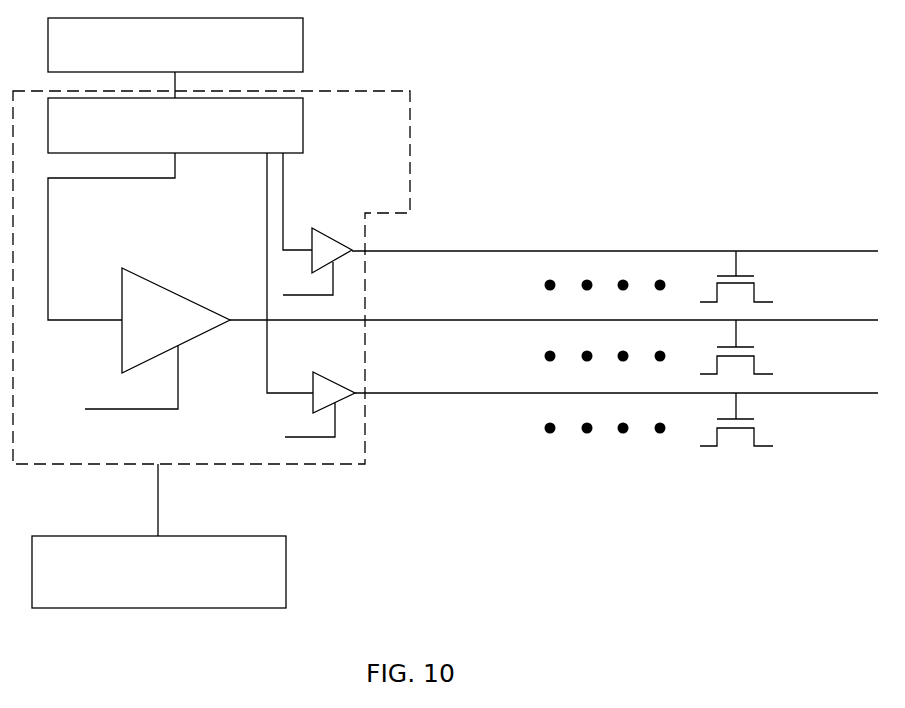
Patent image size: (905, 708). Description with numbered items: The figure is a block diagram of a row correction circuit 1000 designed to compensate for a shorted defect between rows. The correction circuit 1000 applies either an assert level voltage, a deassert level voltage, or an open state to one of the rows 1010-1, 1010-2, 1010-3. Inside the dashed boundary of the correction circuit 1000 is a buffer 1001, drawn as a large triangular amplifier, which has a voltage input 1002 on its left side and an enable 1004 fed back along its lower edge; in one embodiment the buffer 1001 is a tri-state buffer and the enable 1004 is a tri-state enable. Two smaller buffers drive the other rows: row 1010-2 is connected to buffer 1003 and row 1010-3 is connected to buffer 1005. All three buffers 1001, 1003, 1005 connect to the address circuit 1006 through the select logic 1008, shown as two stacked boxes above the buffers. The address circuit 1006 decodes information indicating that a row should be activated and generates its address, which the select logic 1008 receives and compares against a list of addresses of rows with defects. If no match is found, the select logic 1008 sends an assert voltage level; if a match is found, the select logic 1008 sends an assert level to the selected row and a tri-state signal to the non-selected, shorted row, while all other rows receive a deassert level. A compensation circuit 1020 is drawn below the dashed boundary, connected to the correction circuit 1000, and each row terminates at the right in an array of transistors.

The correction circuit 1000 is at (410, 160).
The buffer 1001 is at (172, 292).
The voltage input 1002 is at (66, 320).
The buffer 1003 is at (340, 240).
The enable 1004 is at (113, 409).
The buffer 1005 is at (330, 377).
The address circuit 1006 is at (303, 48).
The select logic 1008 is at (303, 130).
The row 1010-1 is at (375, 393).
The row 1010-2 is at (478, 321).
The row 1010-3 is at (490, 251).
The compensation circuit 1020 is at (286, 580).